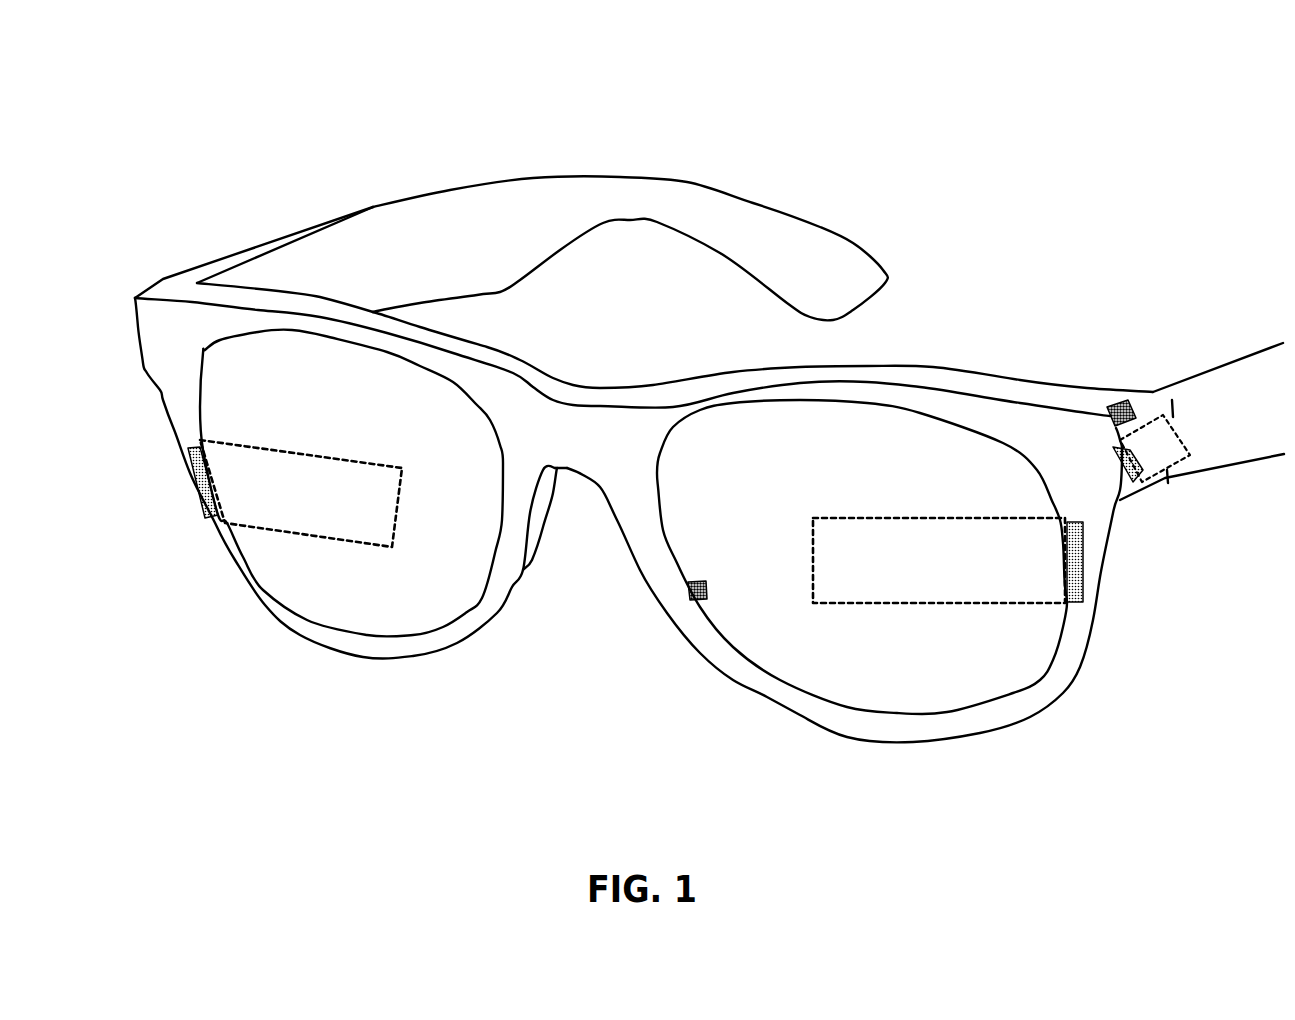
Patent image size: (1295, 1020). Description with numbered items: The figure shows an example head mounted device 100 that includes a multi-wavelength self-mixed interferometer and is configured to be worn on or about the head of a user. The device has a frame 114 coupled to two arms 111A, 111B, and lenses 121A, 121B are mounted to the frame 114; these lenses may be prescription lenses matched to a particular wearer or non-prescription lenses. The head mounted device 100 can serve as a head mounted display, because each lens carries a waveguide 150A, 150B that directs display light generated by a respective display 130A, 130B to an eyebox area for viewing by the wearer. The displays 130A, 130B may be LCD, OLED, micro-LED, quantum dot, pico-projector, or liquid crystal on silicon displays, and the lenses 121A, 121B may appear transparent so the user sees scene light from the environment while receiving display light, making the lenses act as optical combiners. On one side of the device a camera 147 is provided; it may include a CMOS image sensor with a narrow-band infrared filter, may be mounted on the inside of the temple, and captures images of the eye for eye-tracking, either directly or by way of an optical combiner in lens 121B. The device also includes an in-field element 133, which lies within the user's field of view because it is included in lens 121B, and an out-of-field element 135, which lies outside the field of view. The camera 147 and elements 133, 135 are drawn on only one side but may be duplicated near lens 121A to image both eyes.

The head mounted device 100 is at (1243, 44).
The arm 111A is at (488, 262).
The arm 111B is at (1243, 433).
The frame 114 is at (188, 342).
The lens 121A is at (410, 595).
The lens 121B is at (920, 675).
The display 130A is at (203, 490).
The display 130B is at (1083, 565).
The in-field element 133 is at (697, 583).
The out-of-field element 135 is at (1125, 403).
The camera 147 is at (1173, 428).
The waveguide 150A is at (230, 440).
The waveguide 150B is at (1058, 603).